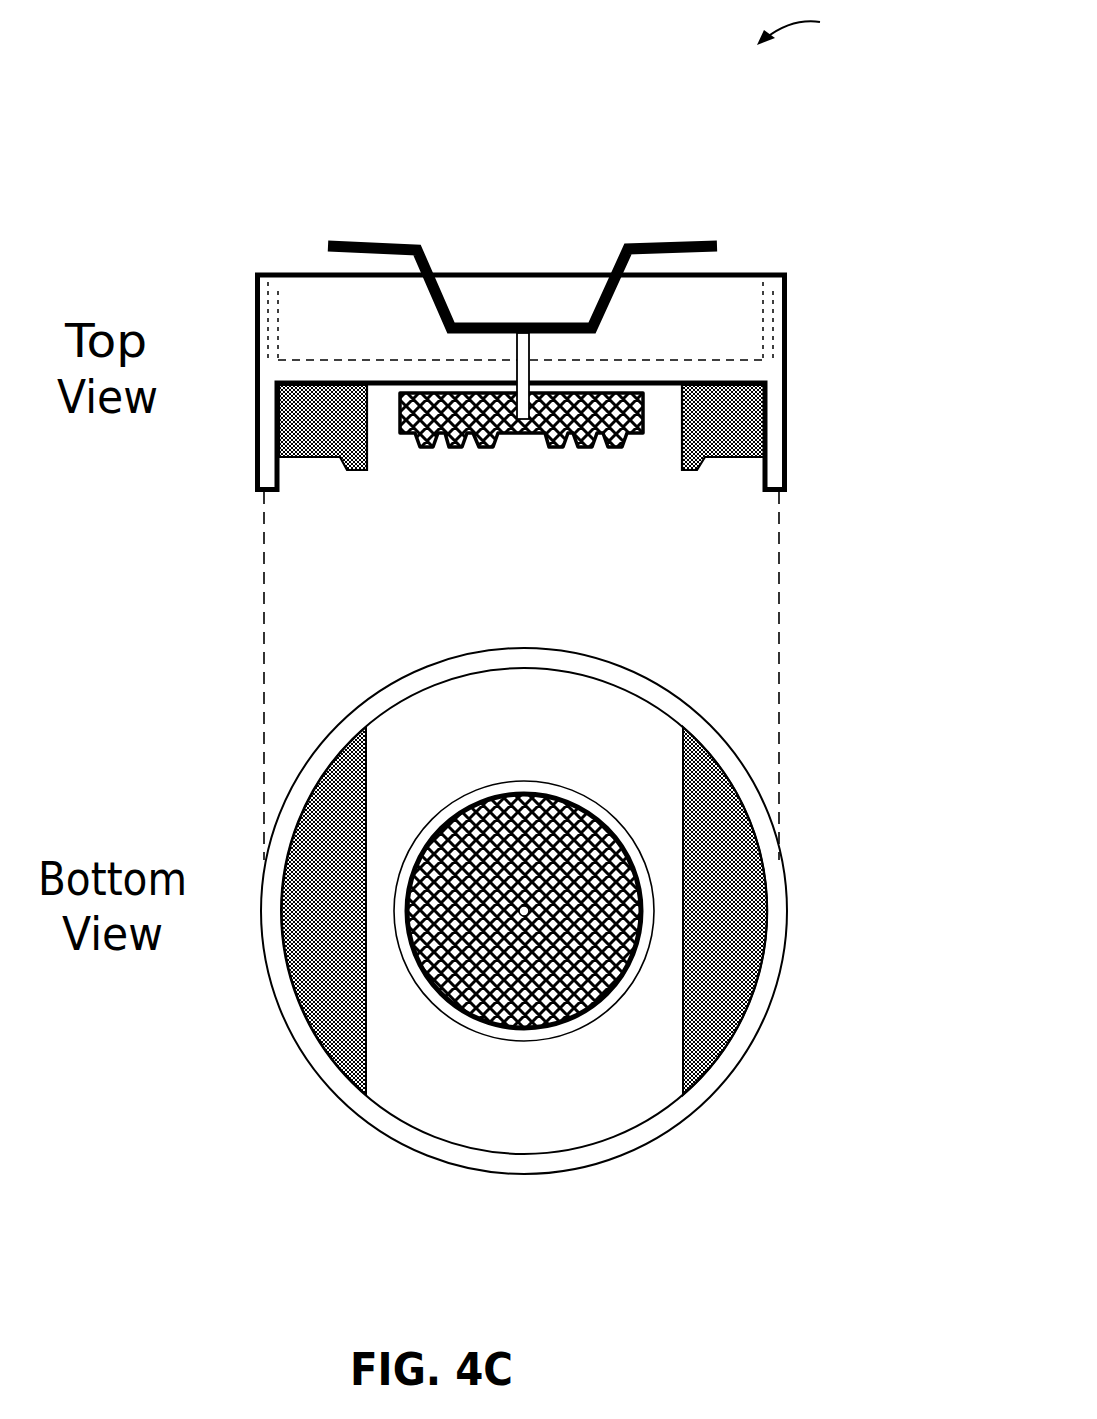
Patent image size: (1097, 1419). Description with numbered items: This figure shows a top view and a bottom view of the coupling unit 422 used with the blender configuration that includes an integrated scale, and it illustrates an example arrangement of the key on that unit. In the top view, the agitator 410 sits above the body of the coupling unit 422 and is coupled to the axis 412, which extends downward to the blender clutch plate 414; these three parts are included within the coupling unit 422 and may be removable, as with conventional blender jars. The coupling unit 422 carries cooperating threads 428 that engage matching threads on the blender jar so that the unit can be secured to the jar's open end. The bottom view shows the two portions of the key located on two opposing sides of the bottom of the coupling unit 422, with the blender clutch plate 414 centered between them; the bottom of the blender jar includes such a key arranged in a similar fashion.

The coupling unit 422 is at (807, 28).
The cooperating threads 428 is at (258, 300).
The agitator 410 is at (687, 237).
The axis 412 is at (535, 350).
The blender clutch plate 414 is at (555, 1005).